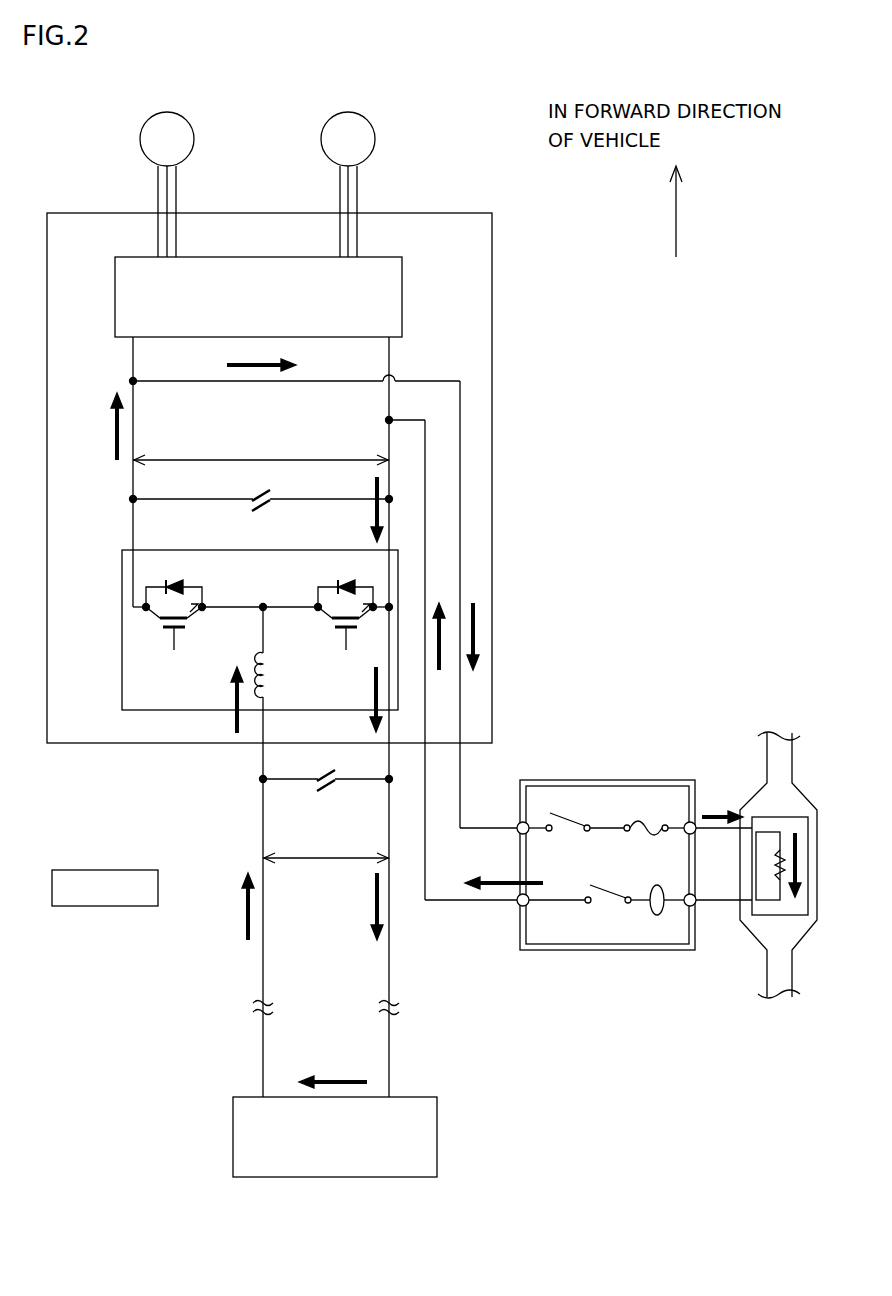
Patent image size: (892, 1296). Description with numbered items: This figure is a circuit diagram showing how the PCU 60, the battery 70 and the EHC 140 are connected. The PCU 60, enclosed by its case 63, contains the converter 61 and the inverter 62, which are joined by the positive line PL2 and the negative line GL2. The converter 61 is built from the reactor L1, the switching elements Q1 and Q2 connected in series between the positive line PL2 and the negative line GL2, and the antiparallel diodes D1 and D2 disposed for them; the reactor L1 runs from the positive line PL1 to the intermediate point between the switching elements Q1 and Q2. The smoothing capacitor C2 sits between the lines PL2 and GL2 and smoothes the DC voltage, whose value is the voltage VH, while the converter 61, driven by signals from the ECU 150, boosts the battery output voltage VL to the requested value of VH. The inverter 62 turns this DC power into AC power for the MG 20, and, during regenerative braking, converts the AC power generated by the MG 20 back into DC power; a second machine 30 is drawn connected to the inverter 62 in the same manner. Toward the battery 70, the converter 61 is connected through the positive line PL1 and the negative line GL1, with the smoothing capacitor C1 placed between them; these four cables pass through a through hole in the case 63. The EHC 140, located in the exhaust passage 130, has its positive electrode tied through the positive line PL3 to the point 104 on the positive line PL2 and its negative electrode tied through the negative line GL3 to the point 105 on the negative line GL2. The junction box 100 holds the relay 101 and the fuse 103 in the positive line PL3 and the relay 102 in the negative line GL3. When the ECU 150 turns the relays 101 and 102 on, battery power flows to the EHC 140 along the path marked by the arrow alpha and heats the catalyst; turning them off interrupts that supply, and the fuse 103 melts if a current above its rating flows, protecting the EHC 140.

The MG (motor generator) 20 is at (346, 111).
The motor generator 30 is at (165, 111).
The power control unit (PCU) 60 is at (508, 331).
The converter 61 is at (122, 634).
The inverter 62 is at (402, 299).
The case 63 is at (492, 475).
The battery 70 is at (335, 1178).
The junction box 100 is at (606, 889).
The relay 101 is at (576, 841).
The relay 102 is at (606, 912).
The fuse 103 is at (654, 845).
The point on positive line PL2 104 is at (133, 381).
The point on negative line GL2 105 is at (389, 420).
The exhaust passage 130 is at (814, 797).
The EHC (electrically heated catalyst) 140 is at (793, 917).
The ECU (electronic control unit) 150 is at (104, 907).
The positive line PL1 is at (263, 1050).
The positive line PL2 is at (133, 527).
The positive line PL3 is at (494, 815).
The negative line GL1 is at (392, 1050).
The negative line GL2 is at (389, 352).
The negative line GL3 is at (460, 906).
The smoothing capacitor C1 is at (326, 792).
The smoothing capacitor C2 is at (261, 513).
The reactor L1 is at (275, 693).
The switching element Q1 is at (173, 630).
The switching element Q2 is at (345, 630).
The diode D1 is at (172, 585).
The diode D2 is at (351, 585).
The voltage of smoothing capacitor C2 VH is at (261, 449).
The voltage output from battery VL is at (326, 847).
The arrow showing power supply path alpha is at (477, 633).